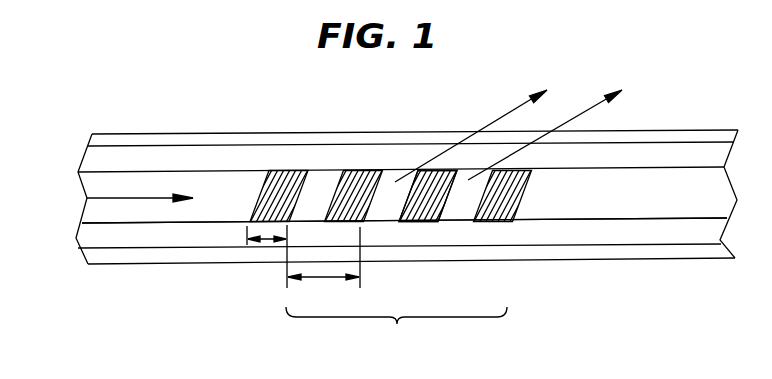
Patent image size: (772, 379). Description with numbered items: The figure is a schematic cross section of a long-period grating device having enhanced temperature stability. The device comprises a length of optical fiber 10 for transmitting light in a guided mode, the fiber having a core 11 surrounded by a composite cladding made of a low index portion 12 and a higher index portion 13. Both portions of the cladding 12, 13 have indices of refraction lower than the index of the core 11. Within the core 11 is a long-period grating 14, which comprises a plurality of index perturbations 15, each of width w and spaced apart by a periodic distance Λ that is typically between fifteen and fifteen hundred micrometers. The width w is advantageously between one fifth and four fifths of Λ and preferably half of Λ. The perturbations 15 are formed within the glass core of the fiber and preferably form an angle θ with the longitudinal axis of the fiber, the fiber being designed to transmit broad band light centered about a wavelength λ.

The optical fiber 10 is at (737, 68).
The core 11 is at (86, 203).
The low index portion 12 is at (166, 237).
The higher index portion 13 is at (197, 133).
The long-period grating 14 is at (297, 173).
The index perturbations 15 is at (440, 213).